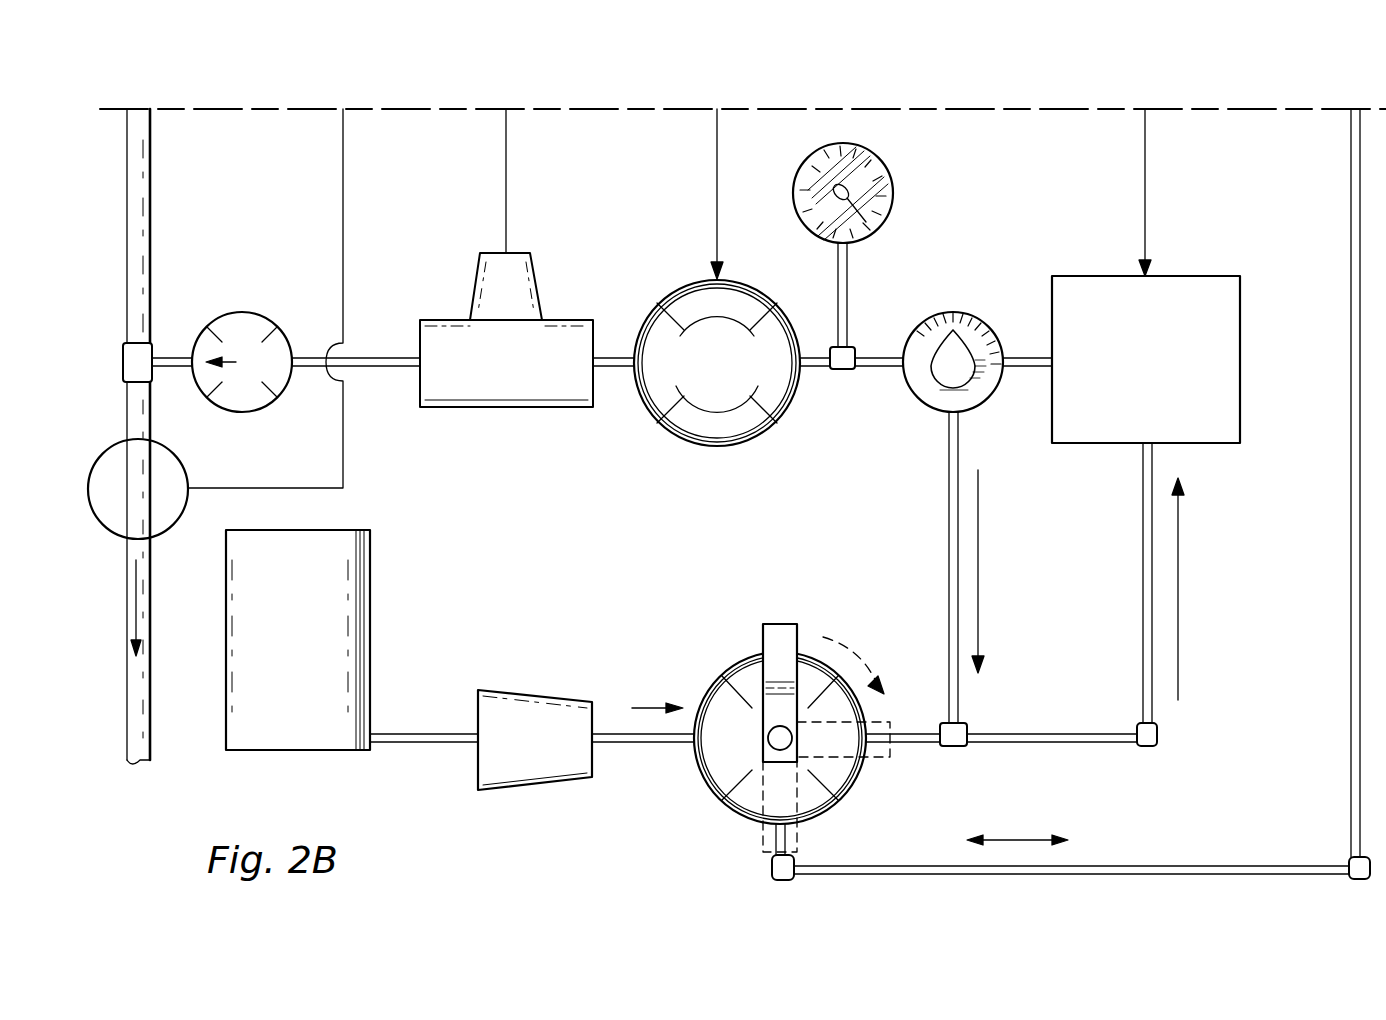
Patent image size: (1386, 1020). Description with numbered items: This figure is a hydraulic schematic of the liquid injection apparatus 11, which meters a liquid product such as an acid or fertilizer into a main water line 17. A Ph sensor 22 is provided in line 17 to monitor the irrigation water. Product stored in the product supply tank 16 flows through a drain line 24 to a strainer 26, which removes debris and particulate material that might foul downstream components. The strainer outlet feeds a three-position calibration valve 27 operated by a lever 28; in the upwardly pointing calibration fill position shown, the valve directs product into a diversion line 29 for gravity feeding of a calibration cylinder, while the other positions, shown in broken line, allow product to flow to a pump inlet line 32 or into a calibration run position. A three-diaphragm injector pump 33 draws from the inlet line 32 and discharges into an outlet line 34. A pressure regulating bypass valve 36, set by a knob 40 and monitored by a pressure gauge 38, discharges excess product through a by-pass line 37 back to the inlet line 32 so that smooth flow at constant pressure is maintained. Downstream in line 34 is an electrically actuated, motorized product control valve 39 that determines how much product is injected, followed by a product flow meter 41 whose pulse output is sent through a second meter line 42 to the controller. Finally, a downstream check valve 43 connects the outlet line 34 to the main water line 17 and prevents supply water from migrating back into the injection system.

The liquid injection apparatus 11 is at (1030, 88).
The product supply tank 16 is at (370, 563).
The main water line 17 is at (150, 245).
The Ph sensor 22 is at (165, 450).
The drain line 24 is at (423, 733).
The strainer 26 is at (520, 690).
The three-position calibration valve 27 is at (700, 780).
The lever 28 is at (763, 641).
The diversion line 29 is at (940, 865).
The pump inlet line 32 is at (1142, 482).
The three-diaphragm injector pump 33 is at (1195, 276).
The outlet line 34 is at (370, 355).
The pressure regulating bypass valve 36 is at (951, 312).
The by-pass line 37 is at (959, 692).
The pressure gauge 38 is at (893, 180).
The product control valve 39 is at (770, 422).
The knob 40 is at (940, 363).
The product flow meter 41 is at (538, 272).
The second meter line 42 is at (506, 163).
The downstream check valve 43 is at (230, 318).